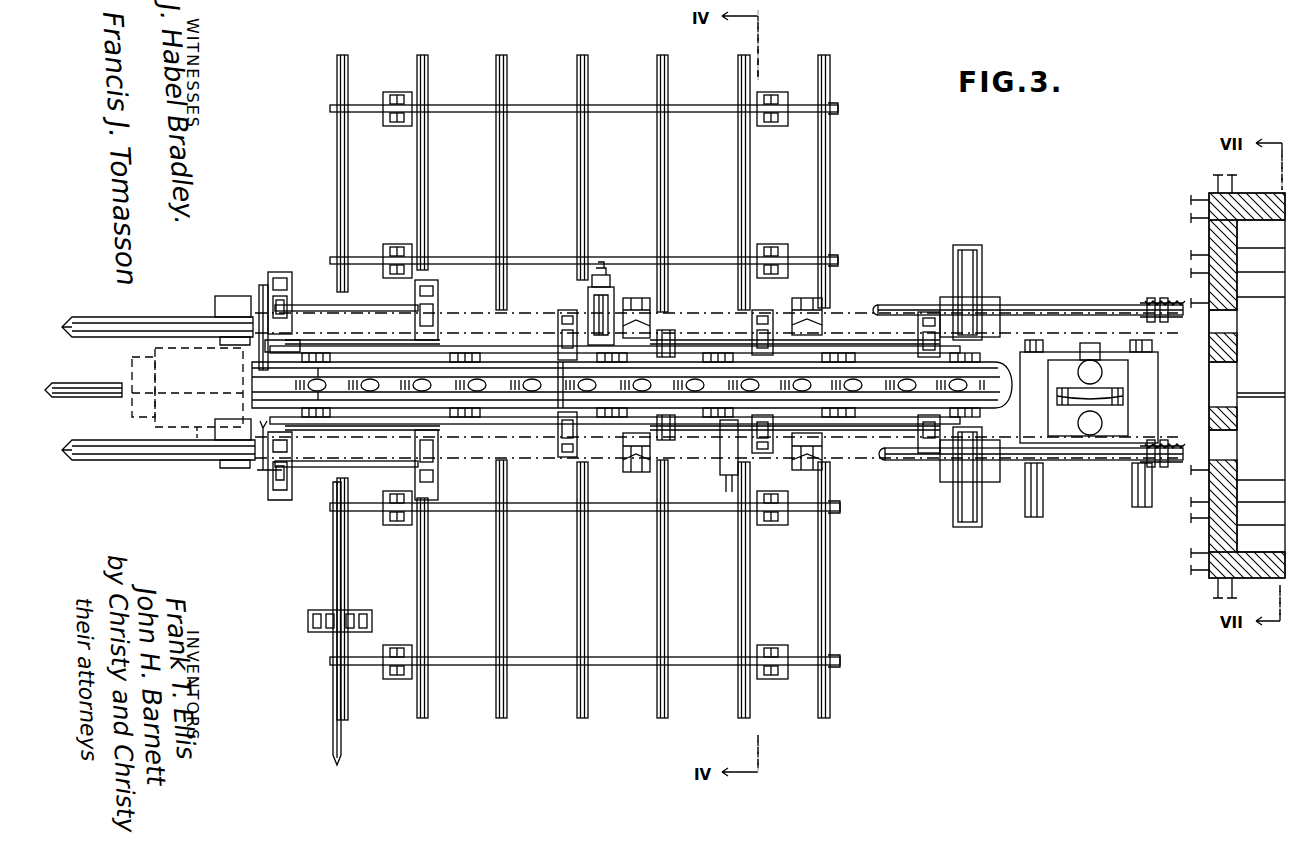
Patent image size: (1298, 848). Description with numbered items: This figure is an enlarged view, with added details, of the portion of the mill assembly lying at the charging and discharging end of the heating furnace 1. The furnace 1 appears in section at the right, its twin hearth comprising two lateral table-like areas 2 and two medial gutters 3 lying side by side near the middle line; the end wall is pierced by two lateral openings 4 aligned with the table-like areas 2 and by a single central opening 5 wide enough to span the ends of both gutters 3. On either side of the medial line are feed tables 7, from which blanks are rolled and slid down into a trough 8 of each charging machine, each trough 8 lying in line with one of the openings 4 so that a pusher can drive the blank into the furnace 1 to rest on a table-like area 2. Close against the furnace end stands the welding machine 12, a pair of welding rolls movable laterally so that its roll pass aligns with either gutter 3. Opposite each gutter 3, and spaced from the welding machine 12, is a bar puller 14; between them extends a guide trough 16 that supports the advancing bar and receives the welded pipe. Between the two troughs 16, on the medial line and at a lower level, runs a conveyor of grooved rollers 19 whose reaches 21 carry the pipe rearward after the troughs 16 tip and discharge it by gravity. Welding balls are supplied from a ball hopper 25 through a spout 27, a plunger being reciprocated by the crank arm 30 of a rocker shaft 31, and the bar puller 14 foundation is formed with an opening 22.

The heating furnace 1 is at (1238, 379).
The lateral table-like areas 2 is at (1261, 386).
The medial gutters 3 is at (1261, 412).
The lateral openings 4 is at (1194, 385).
The central opening 5 is at (1198, 380).
The feed tables 7 is at (574, 410).
The trough 8 is at (623, 392).
The welding machine 12 is at (1106, 428).
The bar puller 14 is at (186, 466).
The guide trough 16 is at (615, 390).
The grooved rollers 19 is at (632, 407).
The conveyor reaches 21 is at (83, 407).
The opening 22 is at (187, 387).
The ball hopper 25 is at (256, 315).
The spout 27 is at (257, 364).
The crank arm 30 is at (262, 468).
The rocker shaft 31 is at (346, 389).